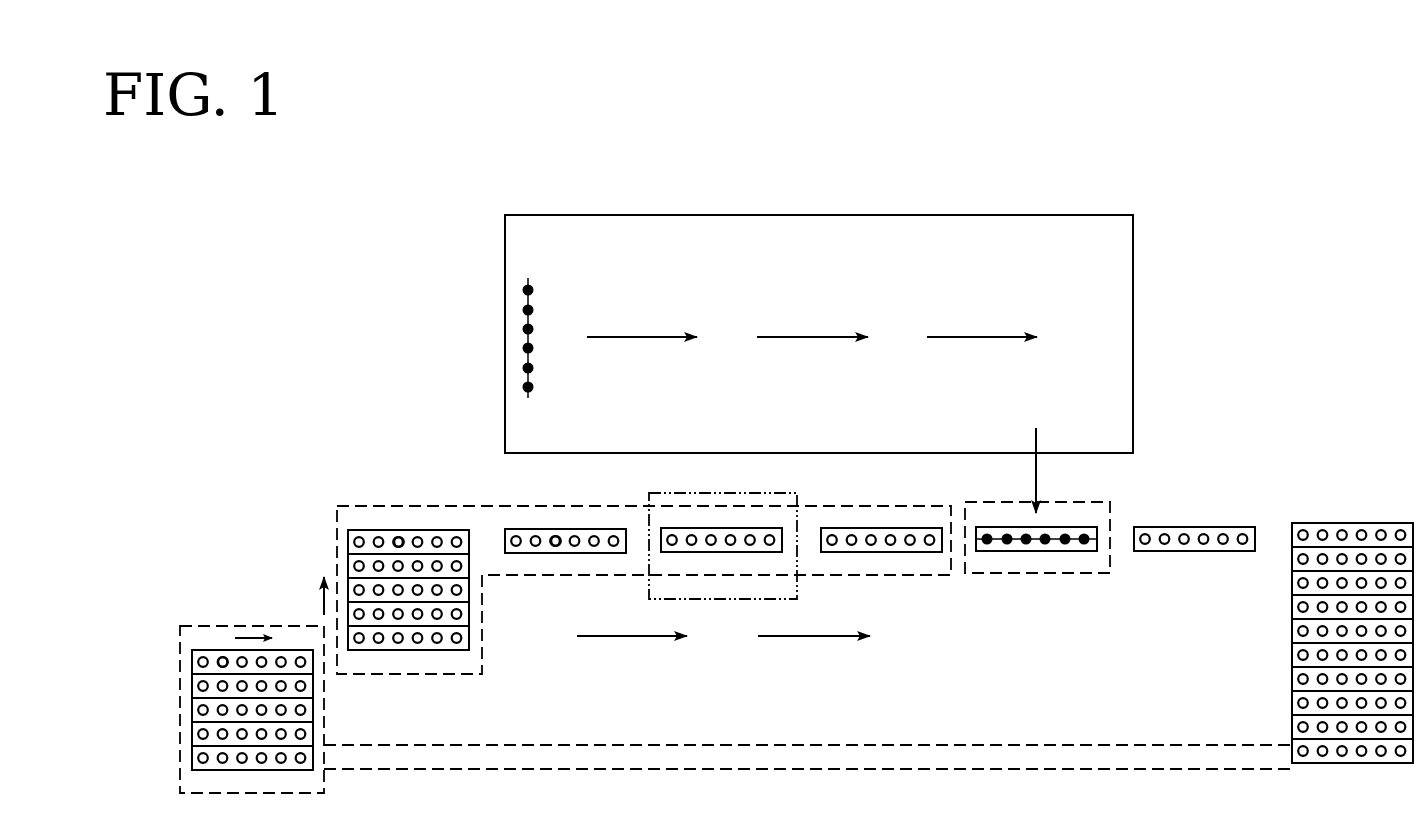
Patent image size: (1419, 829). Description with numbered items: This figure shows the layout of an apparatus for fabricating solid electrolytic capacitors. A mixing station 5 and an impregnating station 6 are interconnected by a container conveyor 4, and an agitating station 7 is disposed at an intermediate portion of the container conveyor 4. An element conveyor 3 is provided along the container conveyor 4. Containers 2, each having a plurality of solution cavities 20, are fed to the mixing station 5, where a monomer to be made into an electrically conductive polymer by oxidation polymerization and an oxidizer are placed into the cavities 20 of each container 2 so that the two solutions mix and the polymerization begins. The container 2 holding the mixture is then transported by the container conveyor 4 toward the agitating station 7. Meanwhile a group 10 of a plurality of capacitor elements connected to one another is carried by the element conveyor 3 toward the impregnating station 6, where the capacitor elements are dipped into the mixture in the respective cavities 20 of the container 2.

The container 2 is at (196, 660).
The element conveyor 3 is at (720, 215).
The container conveyor 4 is at (438, 503).
The mixing station 5 is at (240, 624).
The impregnating station 6 is at (1073, 500).
The agitating station 7 is at (715, 492).
The group of capacitor elements 10 is at (533, 291).
The solution cavity 20 is at (223, 660).